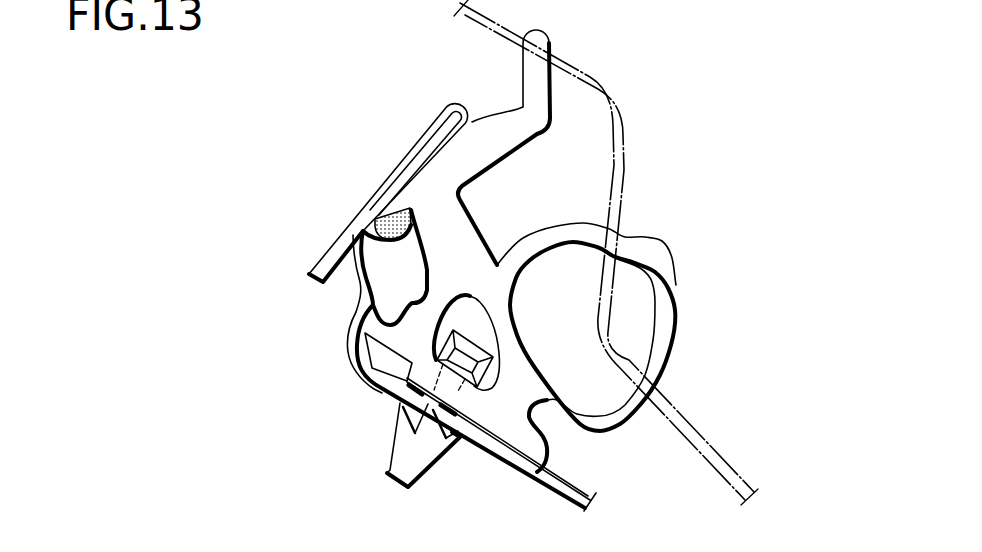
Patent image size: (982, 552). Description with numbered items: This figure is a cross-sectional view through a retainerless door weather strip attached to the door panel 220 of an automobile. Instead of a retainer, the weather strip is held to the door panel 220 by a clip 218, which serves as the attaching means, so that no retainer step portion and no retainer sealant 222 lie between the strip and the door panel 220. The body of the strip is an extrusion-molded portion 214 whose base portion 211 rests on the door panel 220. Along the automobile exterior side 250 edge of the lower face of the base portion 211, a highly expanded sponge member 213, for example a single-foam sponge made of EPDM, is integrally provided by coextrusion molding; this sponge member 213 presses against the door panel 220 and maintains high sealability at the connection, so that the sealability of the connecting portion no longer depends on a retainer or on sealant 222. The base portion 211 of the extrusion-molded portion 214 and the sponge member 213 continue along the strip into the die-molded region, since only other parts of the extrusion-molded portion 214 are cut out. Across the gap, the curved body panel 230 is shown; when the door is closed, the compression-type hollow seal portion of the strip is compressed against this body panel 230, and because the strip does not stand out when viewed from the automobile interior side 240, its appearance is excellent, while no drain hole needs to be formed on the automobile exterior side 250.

The body panel 230 is at (612, 104).
The sealant 222 is at (374, 218).
The door panel 220 is at (360, 300).
The extrusion-molded portion 214 is at (670, 342).
The highly expanded sponge member 213 is at (372, 369).
The base portion 211 is at (497, 428).
The clip 218 is at (388, 466).
The automobile exterior side 250 is at (250, 413).
The automobile interior side 240 is at (860, 413).